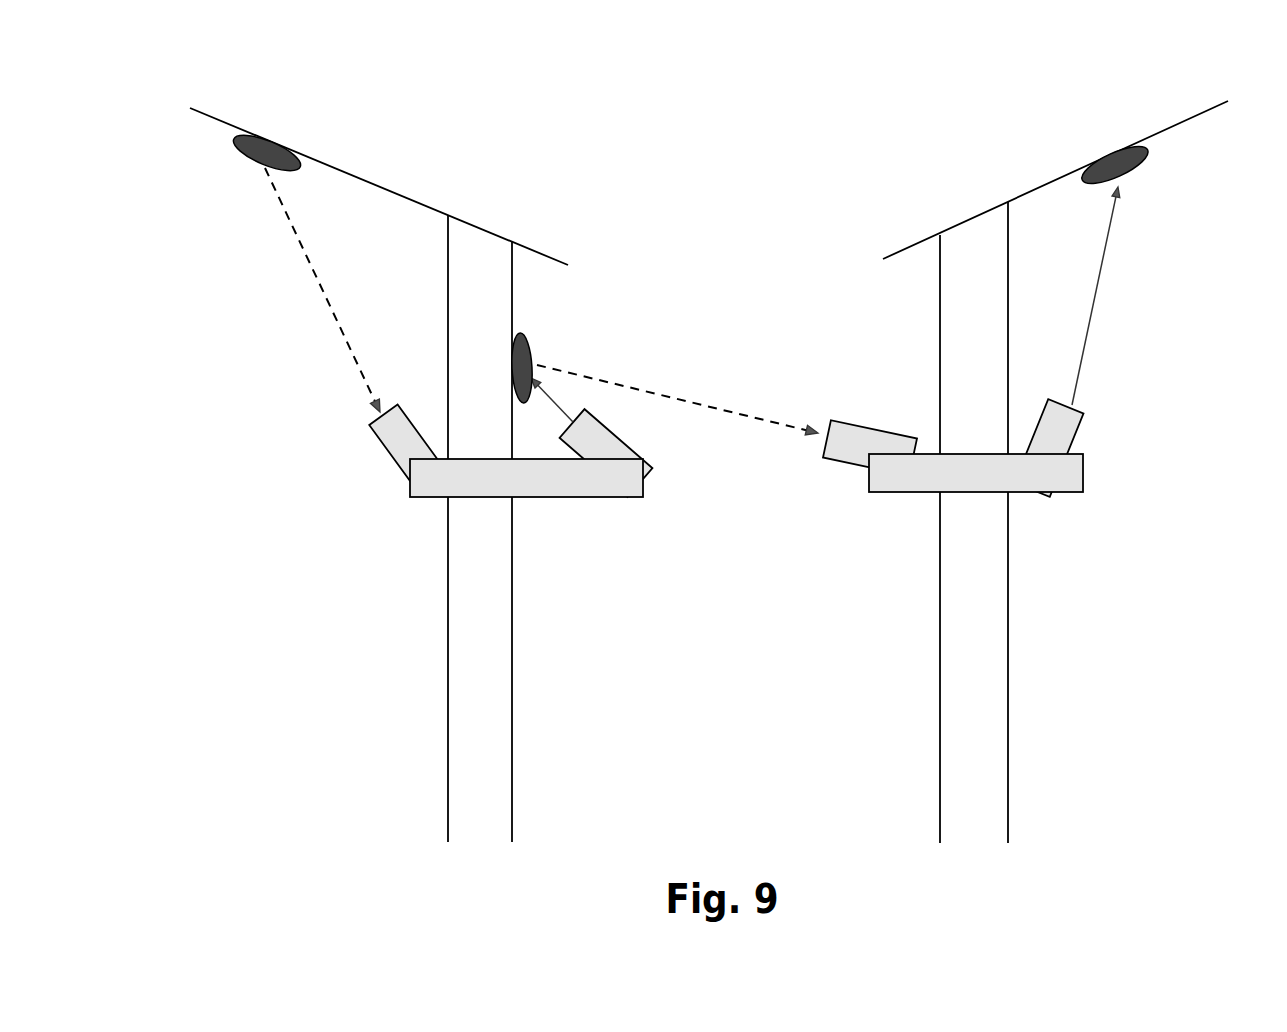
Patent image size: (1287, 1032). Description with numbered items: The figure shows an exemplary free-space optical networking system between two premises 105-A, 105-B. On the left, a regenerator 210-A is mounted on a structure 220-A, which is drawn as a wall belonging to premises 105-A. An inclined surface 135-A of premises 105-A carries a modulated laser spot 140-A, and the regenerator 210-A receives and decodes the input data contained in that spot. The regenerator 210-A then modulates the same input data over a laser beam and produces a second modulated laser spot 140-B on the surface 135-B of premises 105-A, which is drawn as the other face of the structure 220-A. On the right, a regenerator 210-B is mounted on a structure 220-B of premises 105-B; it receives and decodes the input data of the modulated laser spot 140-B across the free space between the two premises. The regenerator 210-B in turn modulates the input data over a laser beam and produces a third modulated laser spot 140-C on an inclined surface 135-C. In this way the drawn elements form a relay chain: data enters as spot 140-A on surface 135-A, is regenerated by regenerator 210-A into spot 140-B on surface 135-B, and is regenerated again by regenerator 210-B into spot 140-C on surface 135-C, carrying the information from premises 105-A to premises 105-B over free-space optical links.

The surface 135-A is at (210, 113).
The surface 135-B is at (512, 747).
The surface 135-C is at (1192, 118).
The modulated laser spot 140-A is at (241, 190).
The modulated laser spot 140-B is at (554, 328).
The modulated laser spot 140-C is at (1142, 199).
The regenerator 210-A is at (582, 520).
The regenerator 210-B is at (1075, 521).
The structure 220-A is at (448, 567).
The structure 220-B is at (942, 713).
The premises 105-A is at (347, 808).
The premises 105-B is at (1084, 815).